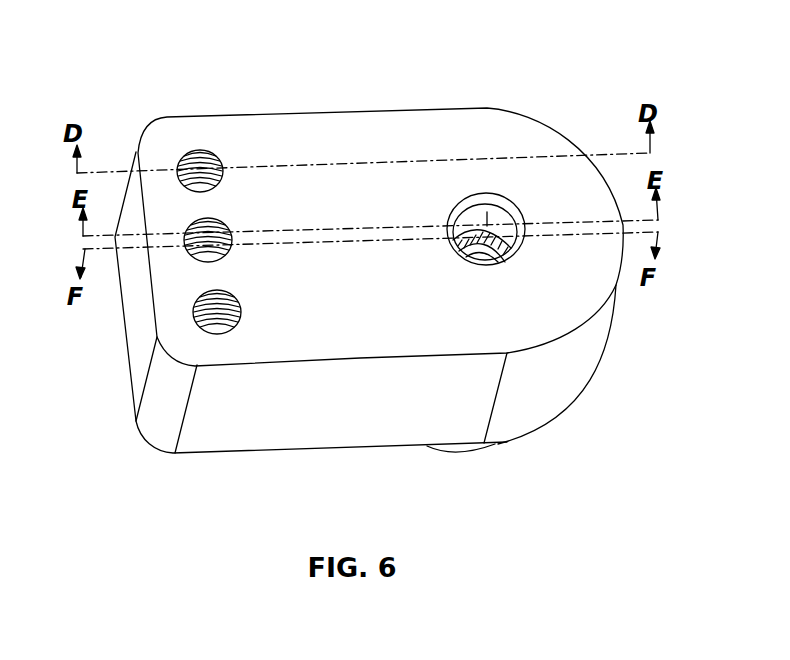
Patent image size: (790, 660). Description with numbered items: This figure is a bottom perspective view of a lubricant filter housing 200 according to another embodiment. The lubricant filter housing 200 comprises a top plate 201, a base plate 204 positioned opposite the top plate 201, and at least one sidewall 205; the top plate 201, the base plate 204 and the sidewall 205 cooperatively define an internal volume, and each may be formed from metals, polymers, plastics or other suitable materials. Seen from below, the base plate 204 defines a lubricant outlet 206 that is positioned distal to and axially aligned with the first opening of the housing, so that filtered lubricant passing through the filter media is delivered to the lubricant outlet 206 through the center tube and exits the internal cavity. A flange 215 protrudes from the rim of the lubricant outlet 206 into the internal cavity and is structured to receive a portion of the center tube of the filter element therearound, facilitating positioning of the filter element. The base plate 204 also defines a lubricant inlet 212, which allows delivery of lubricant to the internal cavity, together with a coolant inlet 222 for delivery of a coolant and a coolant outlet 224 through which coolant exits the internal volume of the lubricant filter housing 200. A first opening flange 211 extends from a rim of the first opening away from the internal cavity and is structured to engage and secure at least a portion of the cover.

The lubricant filter housing 200 is at (486, 90).
The top plate 201 is at (297, 452).
The base plate 204 is at (322, 127).
The sidewall 205 is at (133, 396).
The lubricant outlet 206 is at (517, 260).
The first opening flange 211 is at (475, 450).
The lubricant inlet 212 is at (186, 258).
The flange 215 is at (497, 267).
The coolant inlet 222 is at (193, 315).
The coolant outlet 224 is at (198, 149).